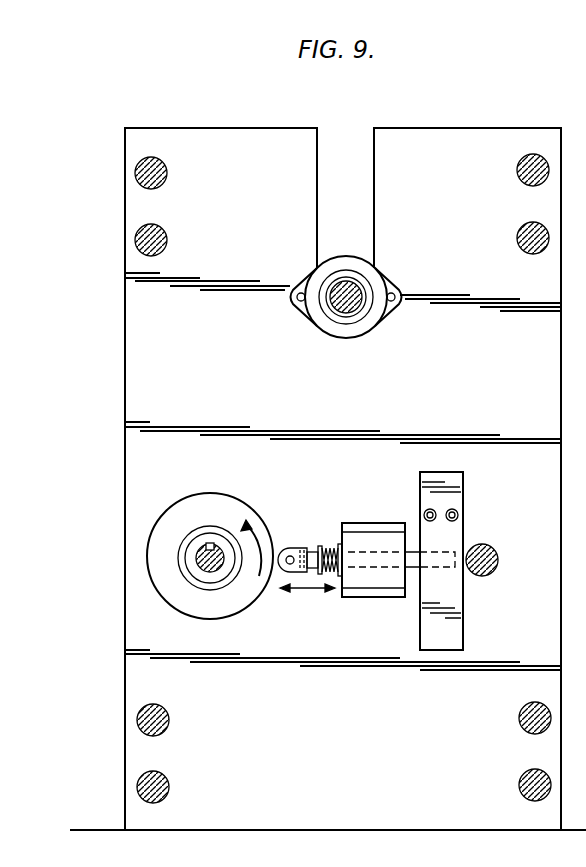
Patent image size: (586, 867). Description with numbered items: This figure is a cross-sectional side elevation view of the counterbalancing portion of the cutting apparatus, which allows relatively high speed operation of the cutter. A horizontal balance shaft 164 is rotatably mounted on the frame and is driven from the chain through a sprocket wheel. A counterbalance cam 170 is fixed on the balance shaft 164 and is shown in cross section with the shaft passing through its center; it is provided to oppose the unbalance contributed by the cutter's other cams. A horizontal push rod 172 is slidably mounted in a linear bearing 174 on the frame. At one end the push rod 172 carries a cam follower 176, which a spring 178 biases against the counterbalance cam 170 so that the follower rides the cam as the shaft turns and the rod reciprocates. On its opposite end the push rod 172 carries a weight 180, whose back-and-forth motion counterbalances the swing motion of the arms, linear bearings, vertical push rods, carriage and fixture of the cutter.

The horizontal balance shaft 164 is at (217, 567).
The counterbalance cam 170 is at (228, 512).
The horizontal push rod 172 is at (415, 568).
The linear bearing 174 is at (370, 572).
The cam follower 176 is at (292, 548).
The spring 178 is at (332, 546).
The weight 180 is at (455, 630).